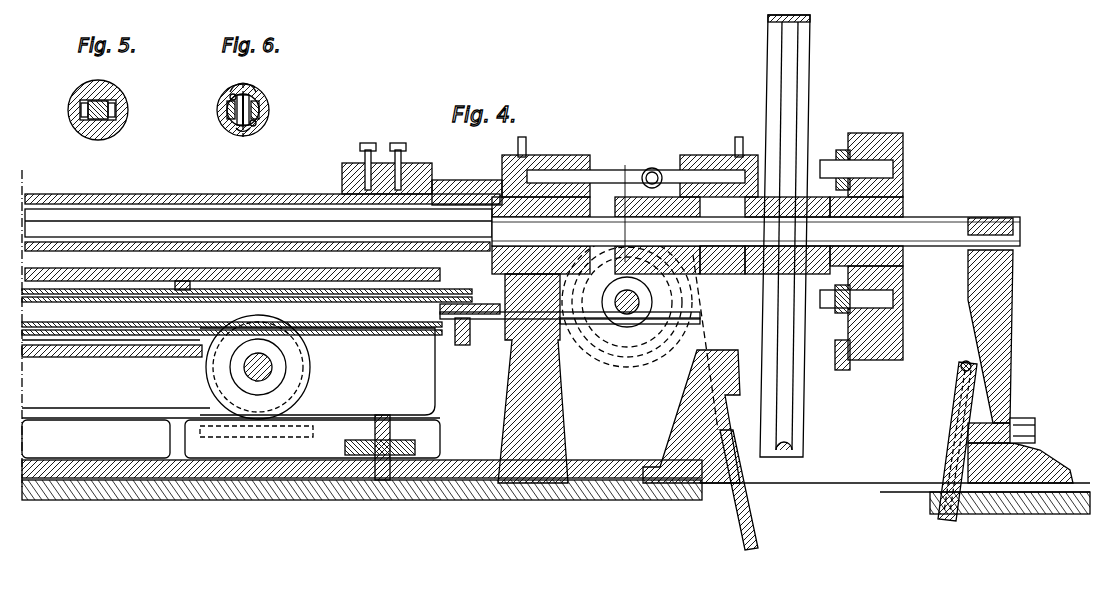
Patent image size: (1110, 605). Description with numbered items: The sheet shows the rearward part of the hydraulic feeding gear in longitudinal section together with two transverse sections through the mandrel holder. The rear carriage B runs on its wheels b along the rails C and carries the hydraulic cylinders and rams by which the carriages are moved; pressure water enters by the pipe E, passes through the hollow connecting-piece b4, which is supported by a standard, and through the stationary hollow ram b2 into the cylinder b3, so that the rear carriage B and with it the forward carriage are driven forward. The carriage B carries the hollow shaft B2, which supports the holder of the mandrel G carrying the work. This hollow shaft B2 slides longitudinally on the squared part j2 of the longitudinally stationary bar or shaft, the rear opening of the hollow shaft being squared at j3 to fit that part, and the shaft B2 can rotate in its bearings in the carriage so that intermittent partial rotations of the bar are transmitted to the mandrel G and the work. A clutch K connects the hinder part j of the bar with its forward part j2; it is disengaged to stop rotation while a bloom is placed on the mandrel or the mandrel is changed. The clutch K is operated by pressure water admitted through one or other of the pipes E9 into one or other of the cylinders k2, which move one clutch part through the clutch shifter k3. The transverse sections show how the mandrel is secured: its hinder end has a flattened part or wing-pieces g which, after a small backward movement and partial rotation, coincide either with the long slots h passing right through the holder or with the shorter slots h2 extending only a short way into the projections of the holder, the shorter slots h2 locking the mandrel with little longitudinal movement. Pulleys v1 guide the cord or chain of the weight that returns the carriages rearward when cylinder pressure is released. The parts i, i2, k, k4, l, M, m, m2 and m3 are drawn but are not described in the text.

In FIG. 4, the rear carriage B is at (150, 272).
In FIG. 4, the hollow shaft B2 is at (186, 196).
In FIG. 4, the wheels b is at (244, 370).
In FIG. 4, the stationary hollow ram b2 is at (162, 300).
In FIG. 4, the cylinder b3 is at (104, 346).
In FIG. 4, the hollow connecting-piece b4 is at (498, 332).
In FIG. 4, the rails C is at (556, 342).
In FIG. 4, the pipe E is at (641, 322).
In FIG. 4, the pipes E9 is at (527, 150).
In FIG. 5, the mandrel G is at (90, 108).
In FIG. 6, the mandrel G is at (262, 110).
In FIG. 6, the flattened part or wing-pieces g is at (258, 100).
In FIG. 5, the slots h is at (117, 106).
In FIG. 6, the slots h is at (224, 108).
In FIG. 6, the slots h2 is at (244, 86).
In FIG. 4, the hub i is at (890, 202).
In FIG. 4, the sleeve i2 is at (760, 258).
In FIG. 4, the hinder part of bar or shaft j is at (957, 210).
In FIG. 4, the squared part of bar or shaft j2 is at (263, 214).
In FIG. 4, the squared rear opening j3 is at (450, 190).
In FIG. 4, the clutch K is at (623, 205).
In FIG. 4, the clutch wheel k is at (904, 140).
In FIG. 6, the cylinders k2 is at (246, 136).
In FIG. 4, the cylinders k2 is at (560, 162).
In FIG. 6, the clutch shifter k3 is at (232, 96).
In FIG. 4, the clutch shifter k3 is at (654, 168).
In FIG. 6, the block k4 is at (262, 104).
In FIG. 4, the lever l is at (770, 47).
In FIG. 4, the clutch member M is at (840, 160).
In FIG. 4, the pin m is at (870, 142).
In FIG. 4, the pin m2 is at (895, 170).
In FIG. 4, the stop m3 is at (851, 346).
In FIG. 4, the pulleys v1 is at (606, 296).